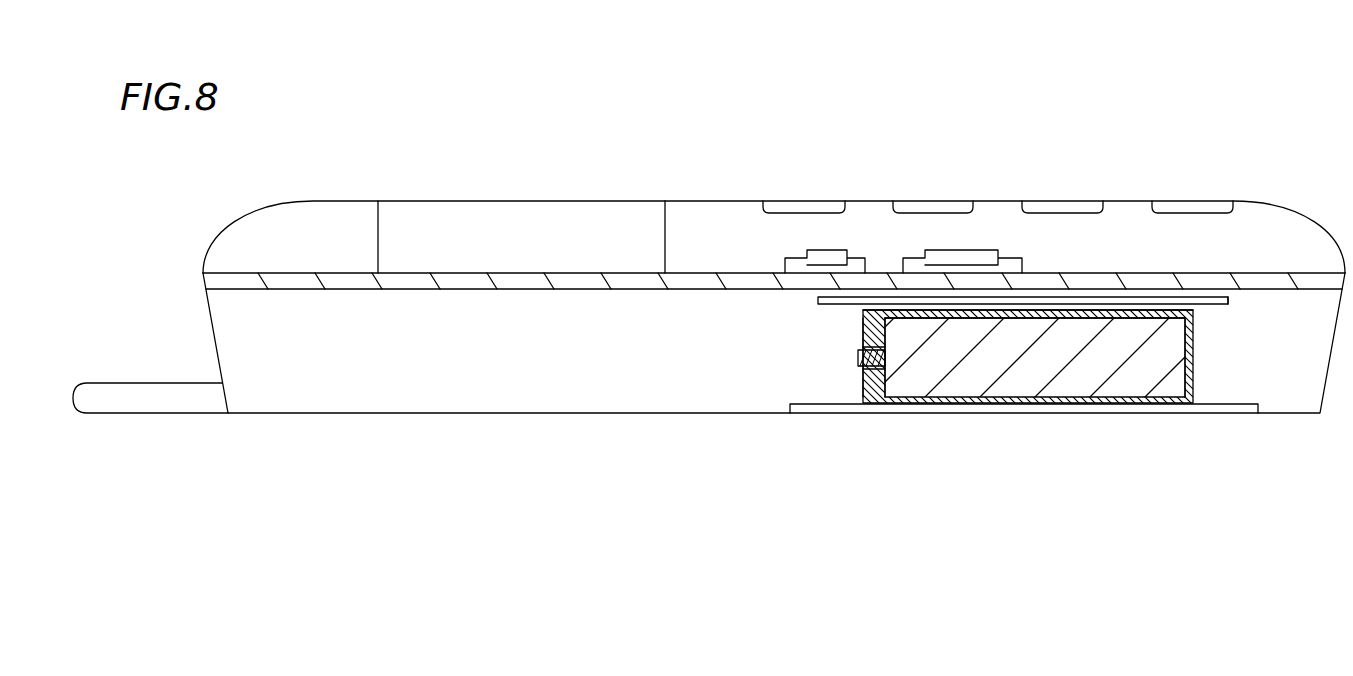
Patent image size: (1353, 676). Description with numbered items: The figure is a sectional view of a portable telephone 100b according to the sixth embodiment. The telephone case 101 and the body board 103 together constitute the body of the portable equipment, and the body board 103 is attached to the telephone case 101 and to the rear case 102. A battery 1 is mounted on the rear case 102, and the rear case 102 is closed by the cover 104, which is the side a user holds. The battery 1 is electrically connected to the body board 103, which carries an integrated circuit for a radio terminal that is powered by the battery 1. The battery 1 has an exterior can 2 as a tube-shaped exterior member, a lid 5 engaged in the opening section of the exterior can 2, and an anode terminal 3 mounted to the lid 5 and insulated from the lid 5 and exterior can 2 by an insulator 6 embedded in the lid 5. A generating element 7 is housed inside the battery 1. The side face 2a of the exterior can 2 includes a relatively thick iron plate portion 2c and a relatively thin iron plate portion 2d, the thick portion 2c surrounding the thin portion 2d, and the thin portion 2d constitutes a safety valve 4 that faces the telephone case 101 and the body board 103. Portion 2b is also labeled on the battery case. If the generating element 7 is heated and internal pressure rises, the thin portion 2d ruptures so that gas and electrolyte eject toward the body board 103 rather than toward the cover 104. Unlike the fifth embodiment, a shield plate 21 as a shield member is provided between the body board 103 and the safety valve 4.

The battery 1 is at (952, 432).
The exterior can 2 is at (1134, 516).
The side face 2a is at (1163, 312).
The sealing plate 2b is at (1196, 357).
The relatively thick iron plate portion 2c is at (1072, 318).
The relatively thin iron plate portion 2d is at (1033, 313).
The anode terminal 3 is at (858, 353).
The safety valve 4 is at (1036, 296).
The lid 5 is at (872, 403).
The insulator 6 is at (863, 342).
The generating element 7 is at (990, 367).
The shield plate 21 is at (1220, 302).
The portable telephone 100b is at (858, 174).
The telephone case 101 is at (722, 200).
The rear case 102 is at (516, 367).
The body board 103 is at (313, 283).
The cover 104 is at (810, 413).